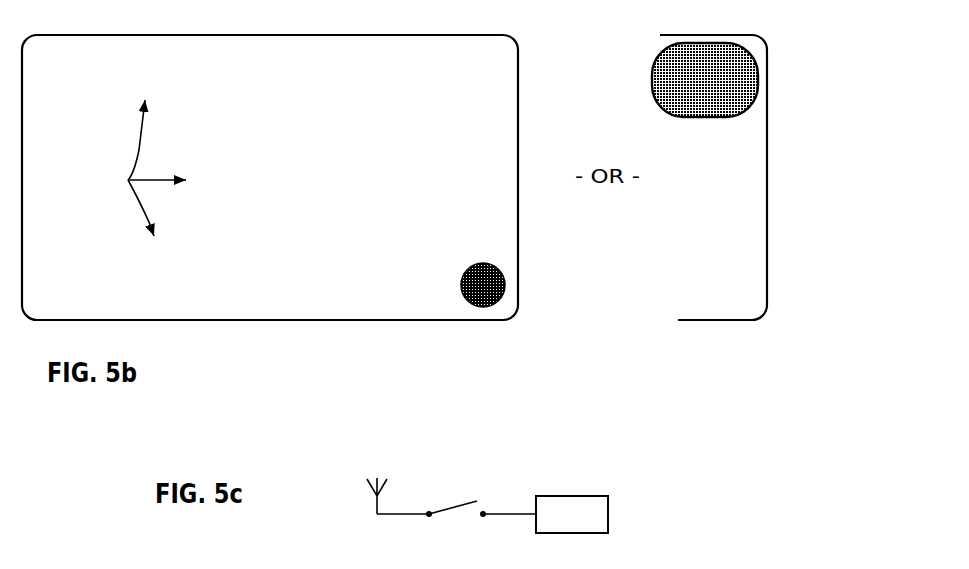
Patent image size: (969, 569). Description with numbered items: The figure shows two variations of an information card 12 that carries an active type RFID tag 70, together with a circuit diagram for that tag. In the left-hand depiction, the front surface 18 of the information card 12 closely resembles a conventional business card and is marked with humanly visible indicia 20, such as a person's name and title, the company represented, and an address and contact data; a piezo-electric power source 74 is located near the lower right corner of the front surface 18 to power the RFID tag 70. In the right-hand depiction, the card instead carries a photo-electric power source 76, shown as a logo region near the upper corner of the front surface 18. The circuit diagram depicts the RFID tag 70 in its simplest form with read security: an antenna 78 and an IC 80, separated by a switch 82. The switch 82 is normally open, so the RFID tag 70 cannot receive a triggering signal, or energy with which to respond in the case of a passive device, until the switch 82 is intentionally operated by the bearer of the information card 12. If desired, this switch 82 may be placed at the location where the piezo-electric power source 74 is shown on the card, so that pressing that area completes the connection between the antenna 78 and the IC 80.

In FIG. 5b, the information card 12 is at (268, 320).
In FIG. 5b, the front surface 18 is at (565, 177).
In FIG. 5b, the humanly visible indicia 20 is at (126, 180).
In FIG. 5c, the RFID tag 70 is at (789, 513).
In FIG. 5b, the piezo-electric power source 74 is at (483, 307).
In FIG. 5b, the photo-electric power source 76 is at (758, 80).
In FIG. 5c, the antenna 78 is at (377, 503).
In FIG. 5c, the IC 80 is at (572, 514).
In FIG. 5c, the switch 82 is at (457, 481).